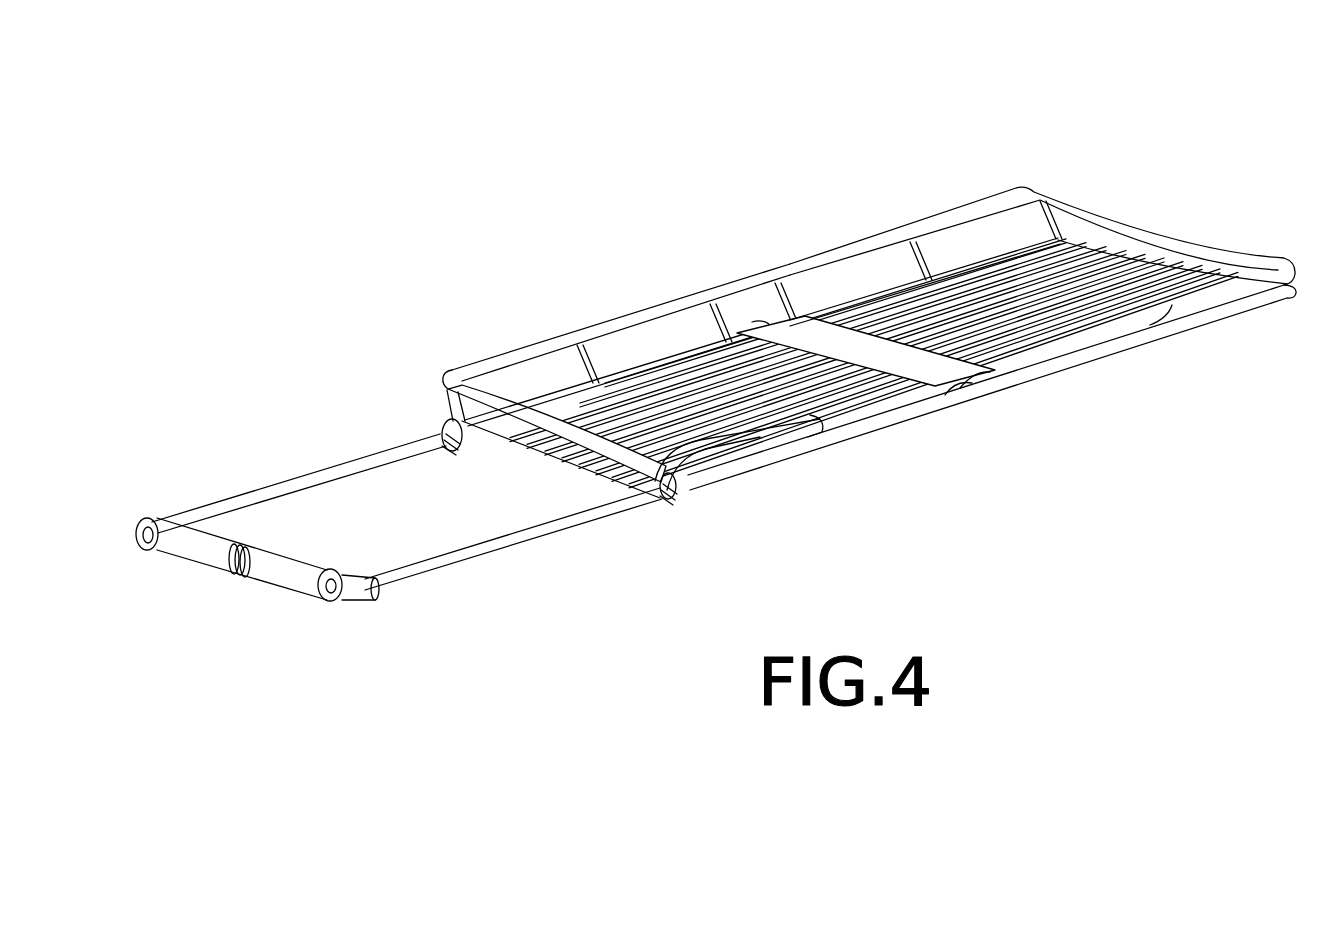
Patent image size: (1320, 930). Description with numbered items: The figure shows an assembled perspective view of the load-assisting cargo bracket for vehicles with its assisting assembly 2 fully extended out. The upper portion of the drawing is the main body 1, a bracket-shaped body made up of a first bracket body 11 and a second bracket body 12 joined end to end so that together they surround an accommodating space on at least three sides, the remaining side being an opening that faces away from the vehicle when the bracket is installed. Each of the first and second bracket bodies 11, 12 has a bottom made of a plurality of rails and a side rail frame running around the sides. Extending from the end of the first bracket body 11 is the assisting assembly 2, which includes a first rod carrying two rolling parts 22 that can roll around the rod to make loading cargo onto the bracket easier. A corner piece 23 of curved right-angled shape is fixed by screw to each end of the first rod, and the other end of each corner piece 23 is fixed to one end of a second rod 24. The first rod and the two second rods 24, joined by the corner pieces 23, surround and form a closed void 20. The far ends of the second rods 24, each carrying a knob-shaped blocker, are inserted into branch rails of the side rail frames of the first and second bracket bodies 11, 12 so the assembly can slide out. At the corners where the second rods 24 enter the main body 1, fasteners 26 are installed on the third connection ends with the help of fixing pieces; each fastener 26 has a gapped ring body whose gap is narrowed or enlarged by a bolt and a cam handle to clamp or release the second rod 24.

The main body 1 is at (828, 82).
The first bracket body 11 is at (603, 316).
The second bracket body 12 is at (876, 231).
The assisting assembly 2 is at (236, 576).
The closed void 20 is at (385, 547).
The rolling part 22 is at (178, 551).
The corner piece 23 is at (136, 527).
The second rod 24 is at (544, 532).
The fastener 26 is at (431, 416).